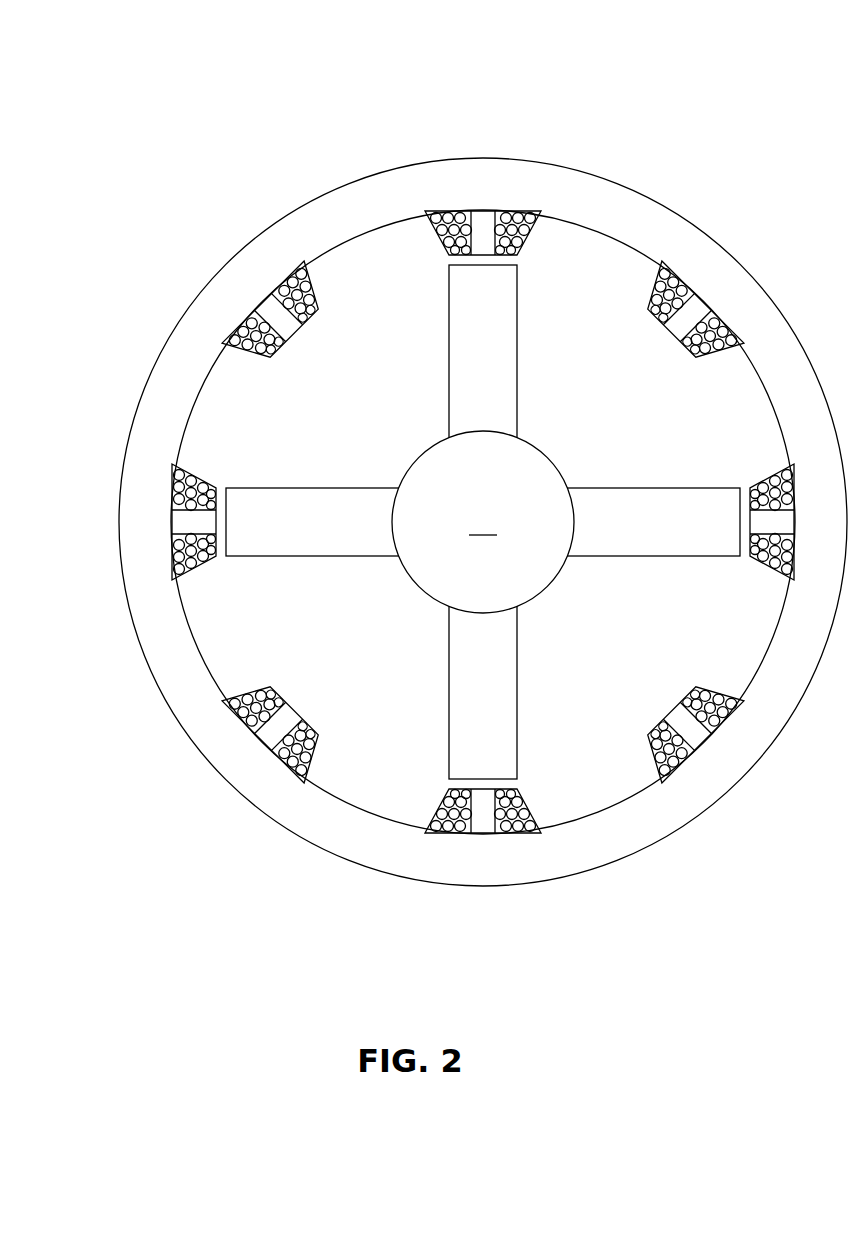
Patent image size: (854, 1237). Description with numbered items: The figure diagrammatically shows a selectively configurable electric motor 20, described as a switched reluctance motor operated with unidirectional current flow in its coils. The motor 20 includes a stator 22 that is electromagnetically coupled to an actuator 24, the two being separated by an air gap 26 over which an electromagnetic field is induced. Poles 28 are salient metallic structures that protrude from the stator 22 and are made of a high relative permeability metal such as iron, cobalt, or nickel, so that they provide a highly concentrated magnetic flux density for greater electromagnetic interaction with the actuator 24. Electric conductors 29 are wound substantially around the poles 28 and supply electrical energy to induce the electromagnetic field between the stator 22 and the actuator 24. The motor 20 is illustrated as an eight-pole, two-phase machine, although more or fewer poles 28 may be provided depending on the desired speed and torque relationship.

The selectively configurable electric motor 20 is at (439, 453).
The stator 22 is at (148, 463).
The actuator 24 is at (483, 522).
The air gap 26 is at (736, 571).
The poles 28 is at (706, 317).
The electric conductors 29 is at (178, 585).